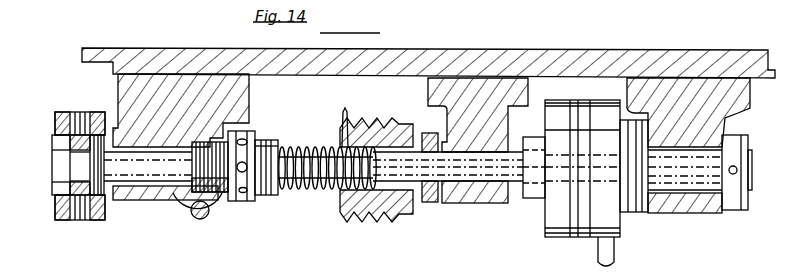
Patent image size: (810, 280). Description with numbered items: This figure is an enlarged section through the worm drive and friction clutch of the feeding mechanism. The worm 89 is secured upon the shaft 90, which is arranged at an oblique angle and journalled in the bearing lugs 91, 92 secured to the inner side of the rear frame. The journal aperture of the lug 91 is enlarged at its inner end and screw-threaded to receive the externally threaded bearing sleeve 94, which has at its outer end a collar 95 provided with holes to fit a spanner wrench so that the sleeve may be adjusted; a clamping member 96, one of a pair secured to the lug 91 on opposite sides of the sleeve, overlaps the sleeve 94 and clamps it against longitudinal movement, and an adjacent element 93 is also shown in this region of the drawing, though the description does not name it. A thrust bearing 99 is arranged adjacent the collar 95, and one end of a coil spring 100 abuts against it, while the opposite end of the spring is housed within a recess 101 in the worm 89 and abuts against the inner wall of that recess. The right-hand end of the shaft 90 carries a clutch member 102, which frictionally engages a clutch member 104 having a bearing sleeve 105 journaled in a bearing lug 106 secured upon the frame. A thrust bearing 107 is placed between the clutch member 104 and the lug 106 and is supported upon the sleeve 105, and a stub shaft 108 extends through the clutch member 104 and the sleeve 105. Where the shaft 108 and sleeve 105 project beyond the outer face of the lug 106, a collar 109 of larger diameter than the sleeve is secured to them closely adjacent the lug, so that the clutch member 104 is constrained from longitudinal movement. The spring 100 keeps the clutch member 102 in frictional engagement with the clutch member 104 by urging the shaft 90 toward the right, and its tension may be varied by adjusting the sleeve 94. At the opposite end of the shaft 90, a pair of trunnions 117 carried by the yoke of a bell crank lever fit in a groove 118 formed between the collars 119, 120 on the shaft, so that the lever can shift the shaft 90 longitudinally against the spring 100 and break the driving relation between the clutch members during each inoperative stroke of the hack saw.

The worm 89 is at (398, 218).
The shaft 90 is at (467, 172).
The bearing lug 91 is at (249, 90).
The bearing lug 92 is at (440, 90).
The hub 93 is at (220, 212).
The bearing sleeve 94 is at (196, 193).
The collar 95 is at (256, 197).
The clamping member 96 is at (200, 219).
The thrust bearing 99 is at (256, 143).
The coil spring 100 is at (312, 190).
The recess 101 is at (345, 112).
The clutch member 102 is at (558, 215).
The clutch member 104 is at (600, 112).
The bearing sleeve 105 is at (685, 176).
The bearing lug 106 is at (695, 95).
The thrust bearing 107 is at (640, 214).
The stub shaft 108 is at (660, 170).
The collar 109 is at (742, 211).
The trunnions 117 is at (82, 112).
The groove 118 is at (68, 163).
The collar 119 is at (66, 182).
The collar 120 is at (100, 196).